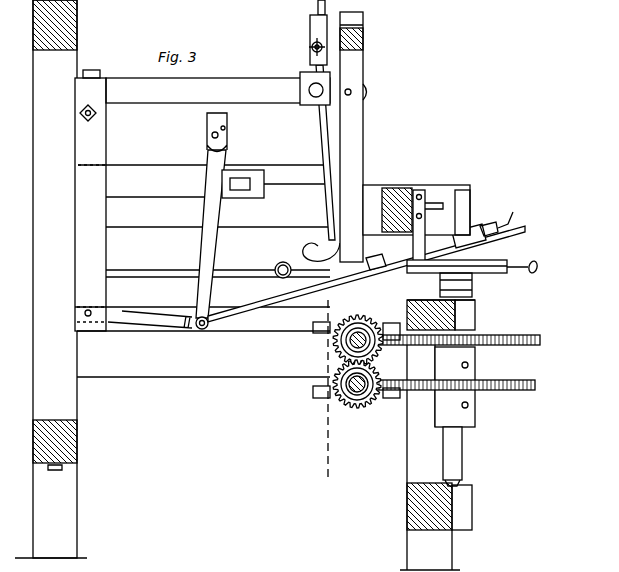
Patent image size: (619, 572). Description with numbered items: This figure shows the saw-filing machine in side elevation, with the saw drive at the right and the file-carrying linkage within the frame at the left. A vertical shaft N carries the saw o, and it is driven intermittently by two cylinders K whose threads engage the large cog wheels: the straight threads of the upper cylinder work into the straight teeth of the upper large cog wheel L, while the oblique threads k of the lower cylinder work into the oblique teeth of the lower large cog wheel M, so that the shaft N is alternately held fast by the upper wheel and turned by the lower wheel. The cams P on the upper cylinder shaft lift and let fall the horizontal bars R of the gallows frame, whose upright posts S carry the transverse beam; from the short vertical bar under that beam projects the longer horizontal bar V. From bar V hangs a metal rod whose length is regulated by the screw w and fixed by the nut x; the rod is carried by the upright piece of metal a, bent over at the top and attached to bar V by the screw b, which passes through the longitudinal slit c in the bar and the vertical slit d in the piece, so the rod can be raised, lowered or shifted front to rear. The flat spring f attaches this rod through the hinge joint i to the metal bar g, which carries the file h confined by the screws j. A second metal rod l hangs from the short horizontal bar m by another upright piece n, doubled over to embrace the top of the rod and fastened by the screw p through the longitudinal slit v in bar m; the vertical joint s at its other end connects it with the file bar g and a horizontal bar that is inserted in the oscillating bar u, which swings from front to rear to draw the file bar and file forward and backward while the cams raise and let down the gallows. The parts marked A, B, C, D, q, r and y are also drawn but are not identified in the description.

The upper bearing block A is at (55, 25).
The left standard B is at (51, 279).
The slide block C is at (416, 210).
The right standard D is at (437, 435).
The cylinder K is at (320, 399).
The upper large cog wheel L is at (461, 341).
The lower large cog wheel M is at (462, 387).
The shaft N is at (455, 416).
The cam P is at (356, 338).
The horizontal bar of gallows frame R is at (366, 274).
The upright post S is at (353, 137).
The longer horizontal bar V is at (204, 190).
The upright piece of metal a is at (283, 270).
The screw b is at (319, 91).
The longitudinal slit c is at (310, 88).
The vertical slit d is at (312, 62).
The flat spring f is at (320, 245).
The metal bar g is at (447, 238).
The file h is at (426, 232).
The hinge joint i is at (374, 256).
The screw j is at (502, 229).
The oblique thread k is at (464, 226).
The metal rod l is at (150, 316).
The short horizontal bar m is at (156, 188).
The upright piece of metal n is at (266, 69).
The saw o is at (478, 280).
The screw p is at (239, 180).
The slot q is at (240, 187).
The rod r is at (211, 215).
The vertical joint s is at (201, 334).
The oscillating bar u is at (202, 223).
The longitudinal slit v is at (91, 304).
The screw w is at (320, 152).
The nut x is at (311, 46).
The nut y is at (89, 135).